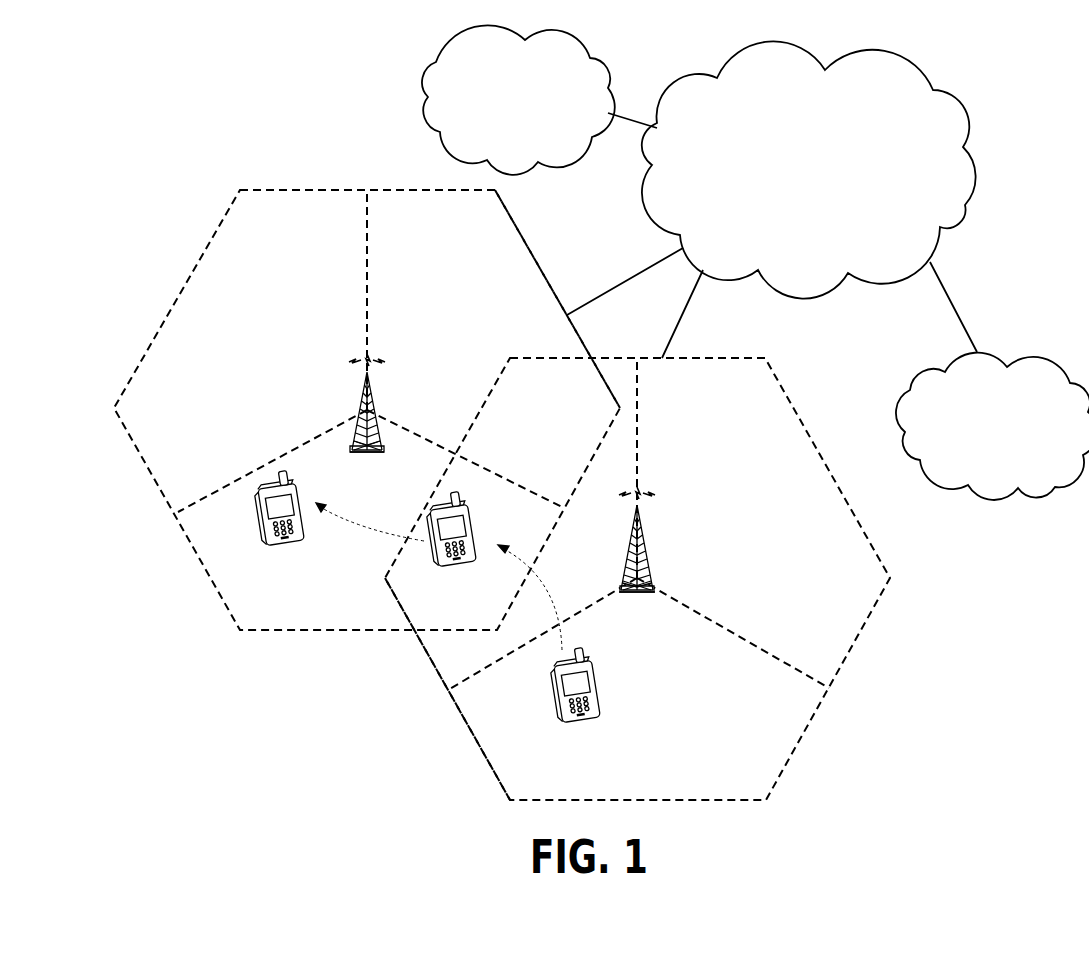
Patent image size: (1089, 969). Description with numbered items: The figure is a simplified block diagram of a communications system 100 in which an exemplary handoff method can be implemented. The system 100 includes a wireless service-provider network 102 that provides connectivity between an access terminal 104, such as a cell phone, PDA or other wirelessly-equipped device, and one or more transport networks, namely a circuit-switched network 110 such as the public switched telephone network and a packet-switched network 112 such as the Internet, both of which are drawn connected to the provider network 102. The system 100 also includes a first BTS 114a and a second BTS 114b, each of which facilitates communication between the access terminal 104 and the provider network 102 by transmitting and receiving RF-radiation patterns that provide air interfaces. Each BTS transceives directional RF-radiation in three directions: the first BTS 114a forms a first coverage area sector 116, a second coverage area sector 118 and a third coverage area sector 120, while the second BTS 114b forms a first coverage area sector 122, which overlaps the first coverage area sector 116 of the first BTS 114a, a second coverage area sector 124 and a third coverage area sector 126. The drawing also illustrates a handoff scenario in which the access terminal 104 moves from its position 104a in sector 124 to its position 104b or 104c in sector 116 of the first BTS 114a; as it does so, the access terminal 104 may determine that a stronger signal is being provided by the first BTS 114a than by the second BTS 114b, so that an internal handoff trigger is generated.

The communications system 100 is at (230, 134).
The wireless service-provider network 102 is at (970, 207).
The access terminal 104 is at (553, 698).
The access terminal position 104a is at (597, 705).
The access terminal position 104b is at (467, 568).
The access terminal position 104c is at (300, 548).
The circuit-switched network 110 is at (432, 128).
The packet-switched network 112 is at (1000, 497).
The first BTS 114a is at (382, 452).
The second BTS 114b is at (643, 595).
The first coverage area sector 116 is at (197, 553).
The second coverage area sector 118 is at (208, 247).
The third coverage area sector 120 is at (553, 292).
The first coverage area sector 122 is at (423, 647).
The second coverage area sector 124 is at (792, 750).
The third coverage area sector 126 is at (810, 440).